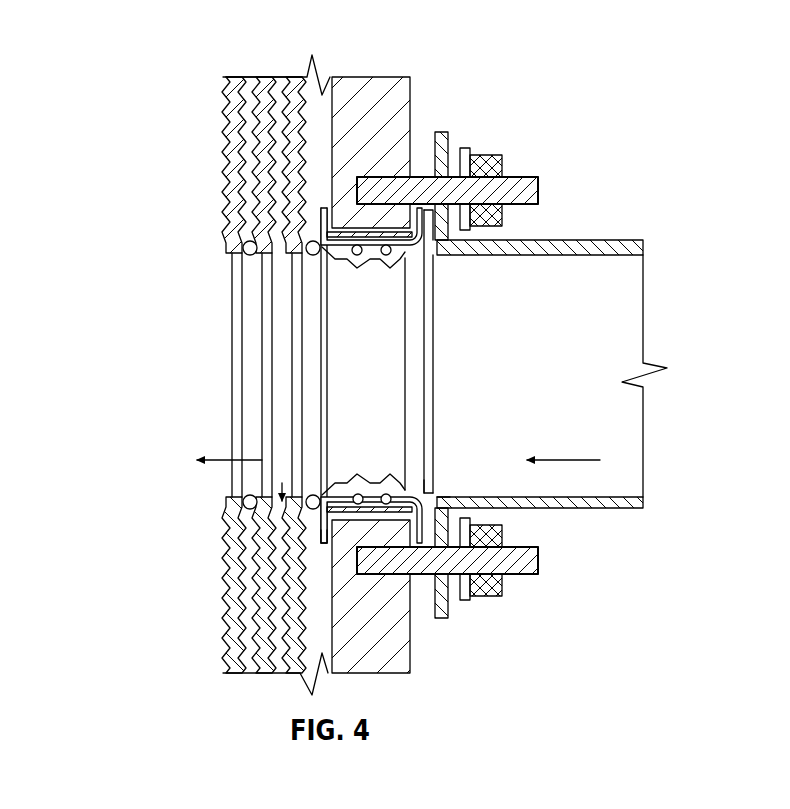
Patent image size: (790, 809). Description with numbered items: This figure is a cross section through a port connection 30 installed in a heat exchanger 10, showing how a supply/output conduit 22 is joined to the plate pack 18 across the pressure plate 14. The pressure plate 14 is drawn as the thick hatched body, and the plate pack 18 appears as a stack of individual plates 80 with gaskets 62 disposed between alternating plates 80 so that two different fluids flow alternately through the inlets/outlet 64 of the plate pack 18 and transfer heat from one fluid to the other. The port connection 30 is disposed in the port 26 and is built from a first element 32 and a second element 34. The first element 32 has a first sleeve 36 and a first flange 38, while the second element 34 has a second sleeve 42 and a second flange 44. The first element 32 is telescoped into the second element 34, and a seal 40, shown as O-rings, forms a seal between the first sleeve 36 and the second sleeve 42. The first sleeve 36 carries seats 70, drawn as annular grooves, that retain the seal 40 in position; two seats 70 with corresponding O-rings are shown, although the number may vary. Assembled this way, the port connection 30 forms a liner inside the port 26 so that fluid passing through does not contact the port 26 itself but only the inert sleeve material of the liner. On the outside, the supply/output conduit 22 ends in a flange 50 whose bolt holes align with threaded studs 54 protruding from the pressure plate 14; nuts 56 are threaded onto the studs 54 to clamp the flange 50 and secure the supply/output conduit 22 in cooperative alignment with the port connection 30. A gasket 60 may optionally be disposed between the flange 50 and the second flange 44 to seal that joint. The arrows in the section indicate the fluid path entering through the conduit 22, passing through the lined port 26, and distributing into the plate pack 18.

The heat exchanger 10 is at (145, 45).
The pressure plate 14 is at (405, 92).
The plate pack 18 is at (208, 122).
The supply/output conduit 22 is at (610, 240).
The port 26 is at (347, 223).
The port connection 30 is at (335, 327).
The first element 32 is at (358, 320).
The second element 34 is at (413, 318).
The first sleeve 36 is at (322, 497).
The first flange 38 is at (327, 545).
The seal 40 is at (362, 496).
The second sleeve 42 is at (428, 495).
The second flange 44 is at (440, 505).
The flange 50 is at (450, 142).
The threaded stud 54 is at (543, 192).
The nut 56 is at (505, 168).
The gasket 60 is at (435, 247).
The gasket 62 is at (250, 256).
The inlets/outlet 64 is at (280, 425).
The seat 70 is at (386, 257).
The plate 80 is at (293, 77).